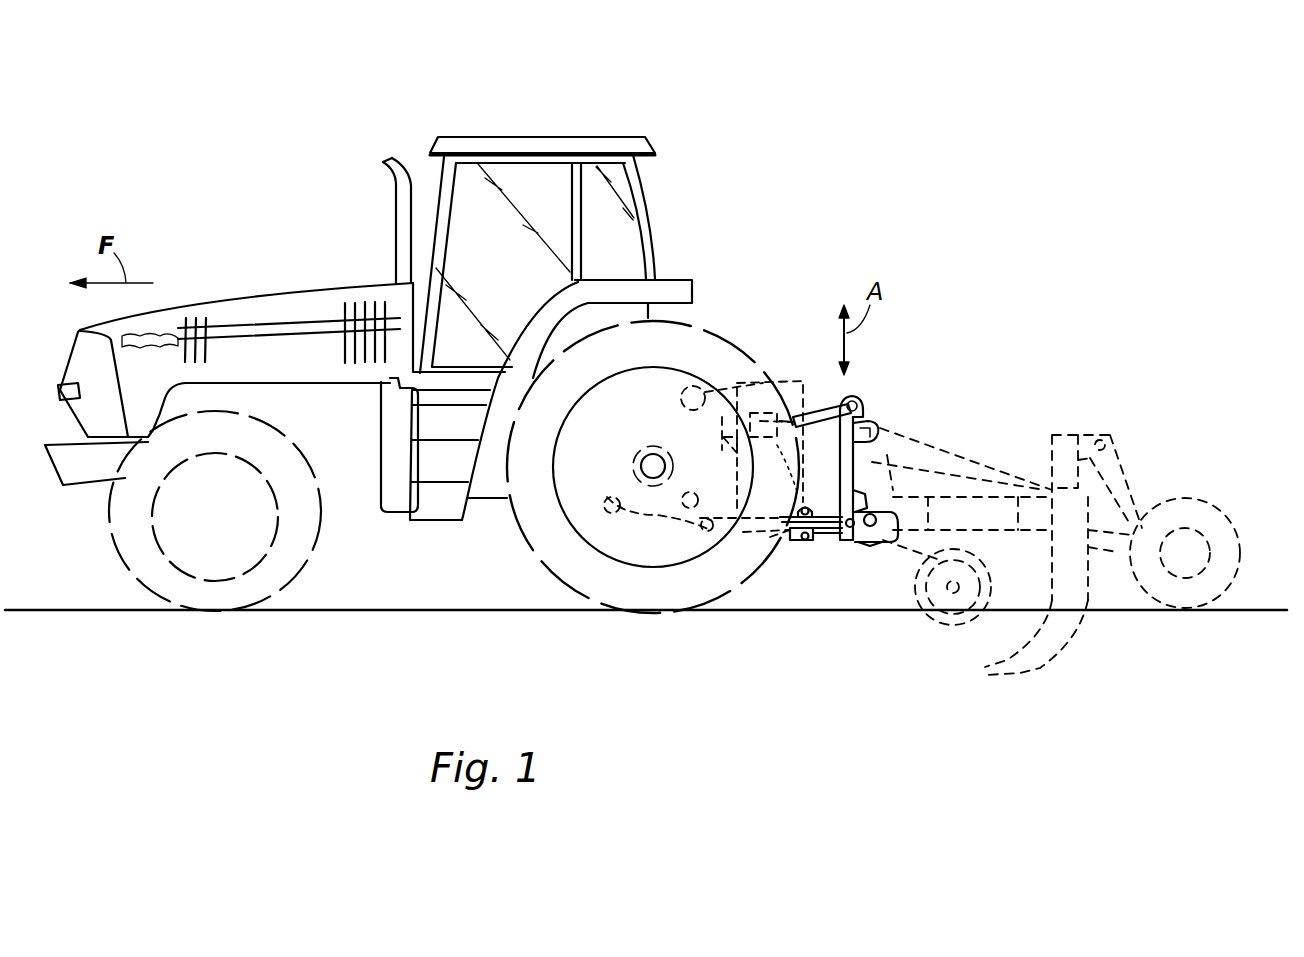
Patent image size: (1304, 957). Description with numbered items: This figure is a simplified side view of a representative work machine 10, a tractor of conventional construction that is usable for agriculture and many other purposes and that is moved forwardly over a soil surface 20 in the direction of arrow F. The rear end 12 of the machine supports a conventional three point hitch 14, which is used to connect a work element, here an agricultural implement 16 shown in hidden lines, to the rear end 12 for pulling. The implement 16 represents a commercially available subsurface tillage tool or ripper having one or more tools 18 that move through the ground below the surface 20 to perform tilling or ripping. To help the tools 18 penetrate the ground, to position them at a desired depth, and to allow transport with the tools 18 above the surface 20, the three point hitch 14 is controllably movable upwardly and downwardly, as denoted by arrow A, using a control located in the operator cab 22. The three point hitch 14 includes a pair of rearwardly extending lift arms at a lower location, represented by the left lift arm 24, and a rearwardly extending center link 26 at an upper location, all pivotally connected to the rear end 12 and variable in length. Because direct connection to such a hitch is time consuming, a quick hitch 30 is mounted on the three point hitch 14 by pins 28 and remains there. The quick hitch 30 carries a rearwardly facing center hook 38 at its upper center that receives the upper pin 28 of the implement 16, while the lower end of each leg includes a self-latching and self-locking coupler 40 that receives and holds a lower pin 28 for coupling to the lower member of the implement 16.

The work machine 10 is at (203, 148).
The rear end 12 is at (676, 530).
The three point hitch 14 is at (822, 403).
The agricultural implement 16 is at (1117, 435).
The tools 18 is at (1058, 650).
The soil surface 20 is at (1272, 609).
The operator cab 22 is at (522, 136).
The left lift arm 24 is at (793, 532).
The center link 26 is at (810, 413).
The pins 28 is at (857, 403).
The quick hitch 30 is at (870, 542).
The center hook 38 is at (873, 423).
The self-latching and self-locking coupler 40 is at (893, 515).